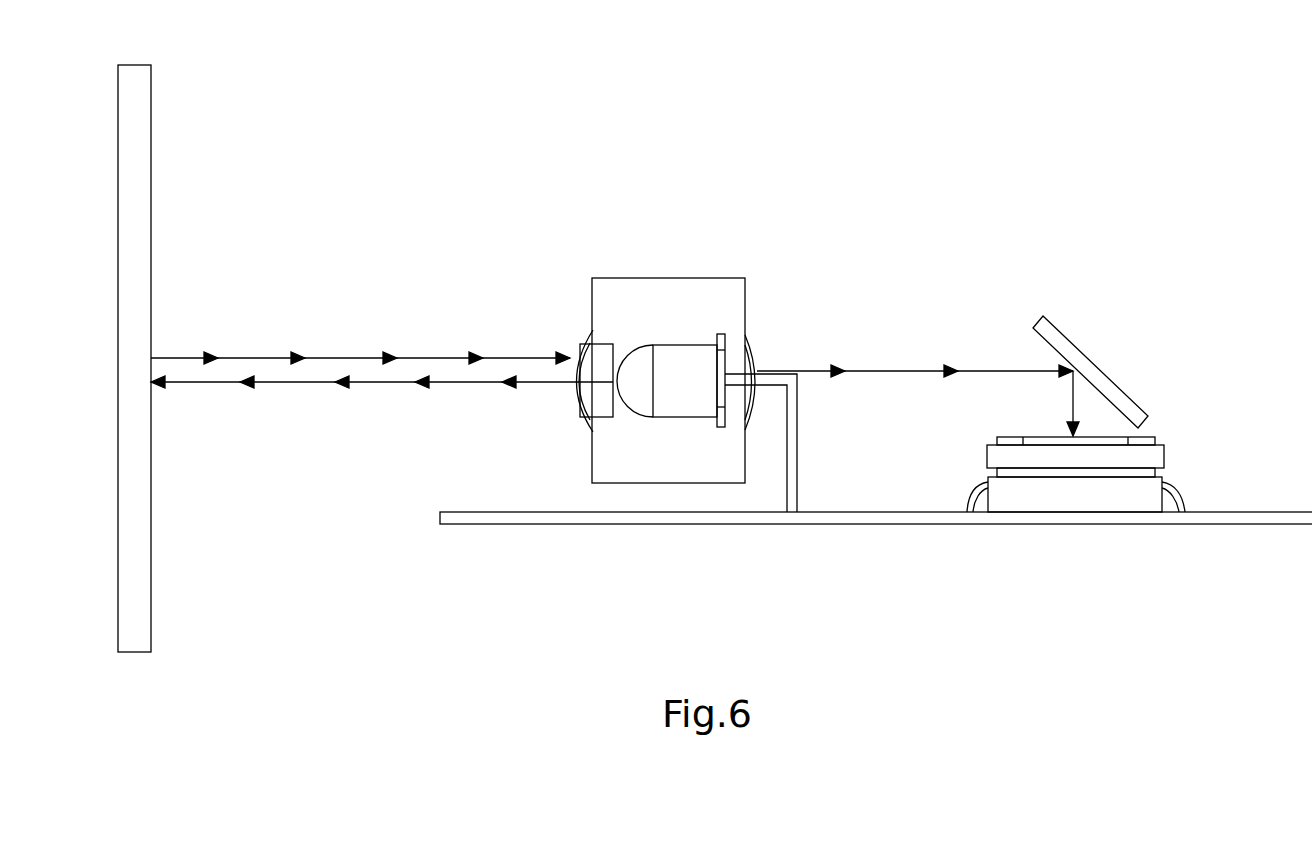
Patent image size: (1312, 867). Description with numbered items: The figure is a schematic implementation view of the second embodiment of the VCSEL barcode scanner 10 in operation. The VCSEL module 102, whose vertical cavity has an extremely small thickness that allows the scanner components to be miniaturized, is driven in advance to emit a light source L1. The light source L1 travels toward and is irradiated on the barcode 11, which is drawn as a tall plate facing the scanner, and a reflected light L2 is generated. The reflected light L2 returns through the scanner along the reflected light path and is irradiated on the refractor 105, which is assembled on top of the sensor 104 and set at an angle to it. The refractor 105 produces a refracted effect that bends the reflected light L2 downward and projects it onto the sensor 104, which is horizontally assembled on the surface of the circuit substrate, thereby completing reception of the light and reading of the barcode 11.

The VCSEL barcode scanner 10 is at (800, 190).
The barcode 11 is at (127, 122).
The VCSEL module 102 is at (690, 400).
The sensor 104 is at (1105, 502).
The refractor 105 is at (1061, 343).
The light source L1 is at (307, 385).
The reflected light L2 is at (337, 357).